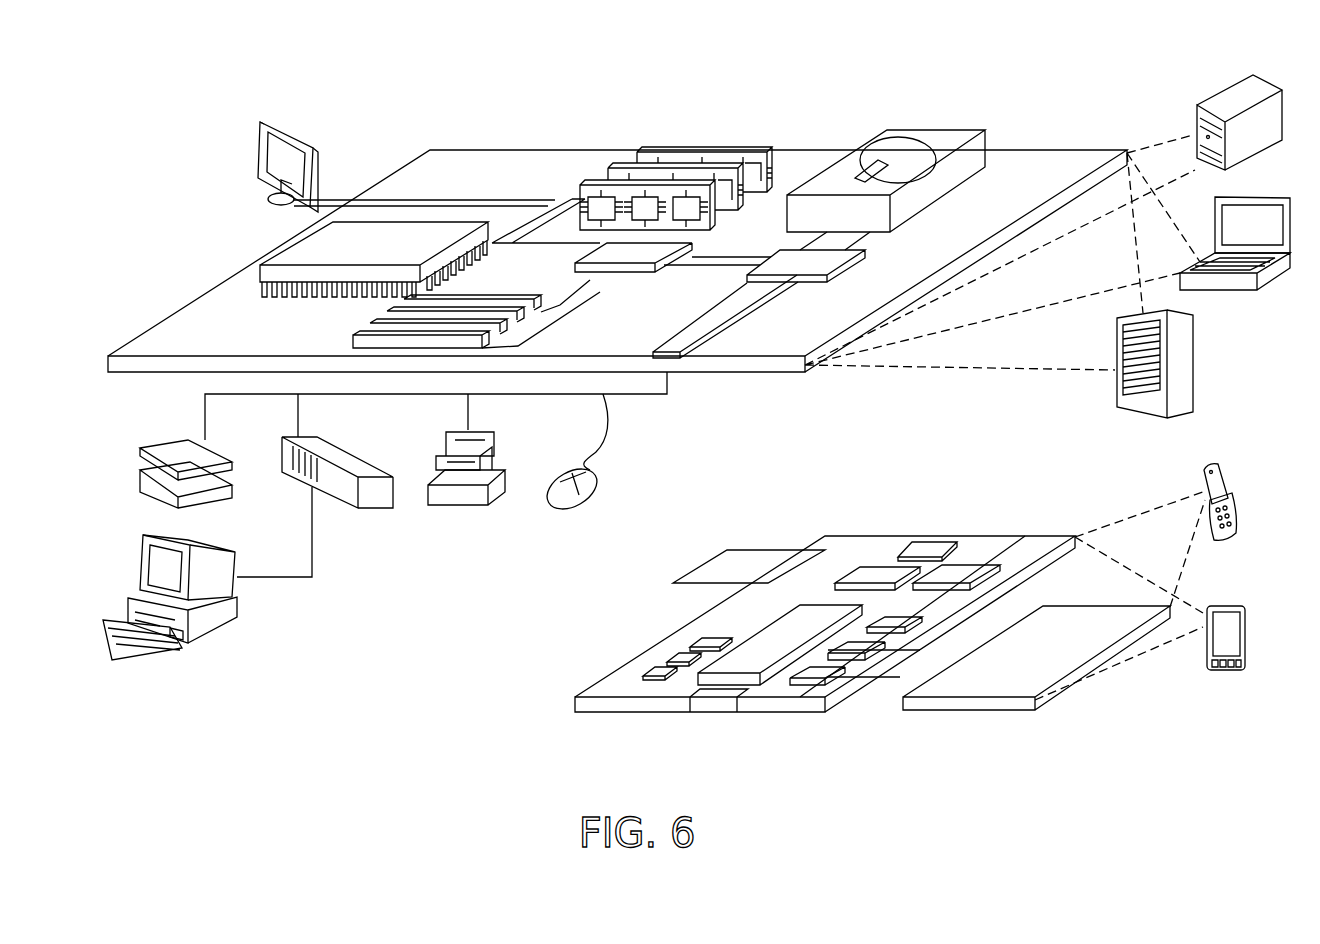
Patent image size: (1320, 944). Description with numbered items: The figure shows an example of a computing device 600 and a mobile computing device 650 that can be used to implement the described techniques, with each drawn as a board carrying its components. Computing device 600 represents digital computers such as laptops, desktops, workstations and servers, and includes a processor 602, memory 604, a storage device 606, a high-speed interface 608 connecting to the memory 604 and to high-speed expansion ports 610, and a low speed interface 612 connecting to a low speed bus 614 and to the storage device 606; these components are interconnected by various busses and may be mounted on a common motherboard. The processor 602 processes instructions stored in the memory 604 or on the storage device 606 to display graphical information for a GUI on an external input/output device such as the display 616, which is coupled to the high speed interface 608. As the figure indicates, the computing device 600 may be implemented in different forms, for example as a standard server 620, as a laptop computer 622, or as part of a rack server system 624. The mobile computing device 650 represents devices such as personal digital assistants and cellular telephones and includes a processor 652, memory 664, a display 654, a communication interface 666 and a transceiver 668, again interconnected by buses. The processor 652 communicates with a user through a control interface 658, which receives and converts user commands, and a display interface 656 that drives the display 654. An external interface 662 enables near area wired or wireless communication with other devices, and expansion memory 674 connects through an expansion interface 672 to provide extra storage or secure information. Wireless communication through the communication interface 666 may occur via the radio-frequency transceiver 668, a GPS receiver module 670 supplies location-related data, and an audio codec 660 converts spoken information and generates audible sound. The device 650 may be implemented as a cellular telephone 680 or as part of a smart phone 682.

The computing device 600 is at (651, 397).
The processor 602 is at (285, 249).
The memory 604 is at (708, 145).
The storage device 606 is at (928, 130).
The high-speed interface 608 is at (645, 253).
The high-speed expansion ports 610 is at (378, 322).
The low speed interface 612 is at (781, 259).
The low speed bus 614 is at (674, 350).
The display 616 is at (264, 118).
The standard server 620 is at (1216, 103).
The laptop computer 622 is at (1265, 197).
The rack server system 624 is at (1195, 357).
The computing device 650 is at (533, 716).
The processor 652 is at (752, 650).
The display 654 is at (1072, 621).
The display interface 656 is at (823, 672).
The control interface 658 is at (868, 650).
The audio codec 660 is at (900, 618).
The external interface 662 is at (715, 703).
The memory 664 is at (668, 655).
The communication interface 666 is at (878, 567).
The transceiver 668 is at (965, 565).
The GPS receiver module 670 is at (925, 545).
The expansion interface 672 is at (808, 548).
The expansion memory 674 is at (731, 548).
The cellular telephone 680 is at (1210, 467).
The smart phone 682 is at (1222, 606).